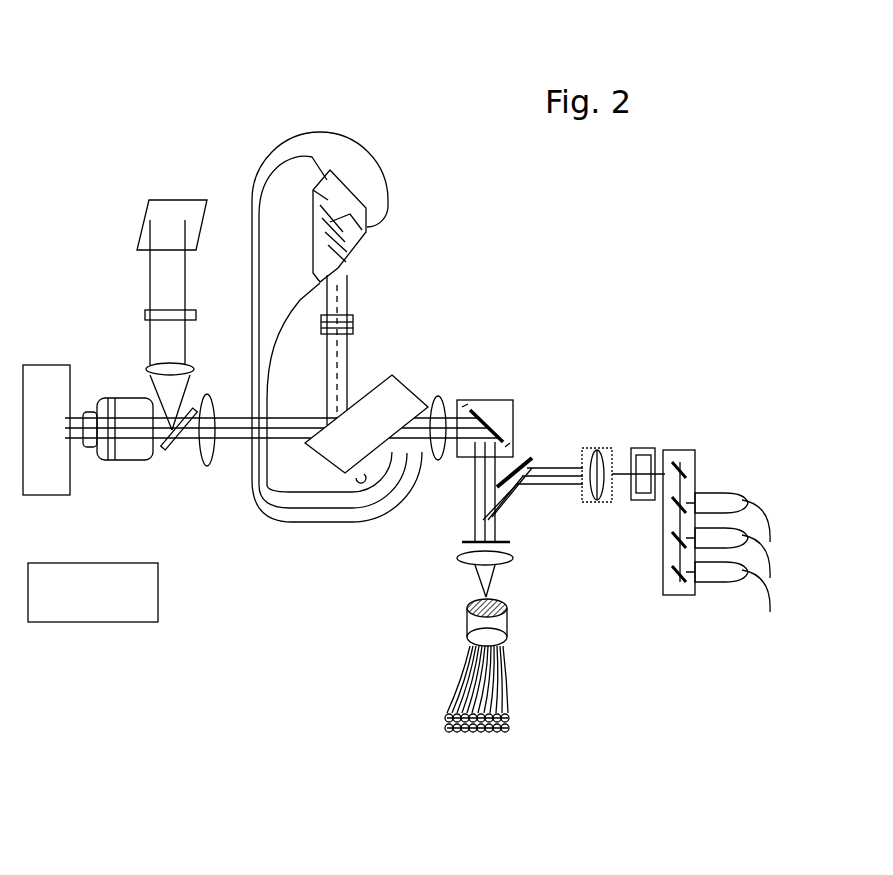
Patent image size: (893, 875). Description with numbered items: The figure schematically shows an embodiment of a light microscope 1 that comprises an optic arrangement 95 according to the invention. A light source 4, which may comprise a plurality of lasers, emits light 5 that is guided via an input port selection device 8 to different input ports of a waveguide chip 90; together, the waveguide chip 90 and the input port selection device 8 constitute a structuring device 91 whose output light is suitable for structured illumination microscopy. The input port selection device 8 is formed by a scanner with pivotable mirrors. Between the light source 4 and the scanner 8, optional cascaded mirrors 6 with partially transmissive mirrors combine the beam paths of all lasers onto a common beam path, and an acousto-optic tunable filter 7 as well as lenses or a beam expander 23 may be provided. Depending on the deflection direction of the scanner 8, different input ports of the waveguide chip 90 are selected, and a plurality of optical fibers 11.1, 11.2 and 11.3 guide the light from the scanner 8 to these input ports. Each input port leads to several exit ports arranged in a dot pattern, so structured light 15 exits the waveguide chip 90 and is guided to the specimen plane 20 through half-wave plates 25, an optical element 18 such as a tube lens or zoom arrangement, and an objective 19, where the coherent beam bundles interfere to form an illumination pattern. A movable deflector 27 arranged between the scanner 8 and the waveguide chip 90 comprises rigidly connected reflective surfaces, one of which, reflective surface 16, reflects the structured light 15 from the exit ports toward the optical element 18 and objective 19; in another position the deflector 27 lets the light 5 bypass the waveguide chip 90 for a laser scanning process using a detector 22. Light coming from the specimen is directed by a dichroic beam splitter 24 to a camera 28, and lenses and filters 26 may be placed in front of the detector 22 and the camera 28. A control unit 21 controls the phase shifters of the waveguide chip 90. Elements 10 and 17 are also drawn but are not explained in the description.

The light microscope 1 is at (192, 56).
The light source 4 is at (727, 483).
The light 5 is at (474, 484).
The cascaded mirrors 6 is at (686, 450).
The acousto-optic tunable filter 7 is at (648, 448).
The input port selection device 8 is at (485, 400).
The focusing lens 10 is at (468, 522).
The optical fiber 11.1 is at (269, 465).
The optical fiber 11.2 is at (262, 512).
The optical fiber 11.3 is at (282, 516).
The structured light 15 is at (327, 381).
The reflective surface 16 is at (386, 385).
The deflecting mirror 17 is at (530, 460).
The optical element 18 is at (208, 466).
The objective 19 is at (125, 462).
The specimen plane 20 is at (57, 402).
The control unit 21 is at (100, 600).
The detector 22 is at (510, 726).
The lenses 23 is at (597, 446).
The beam splitter 24 is at (171, 450).
The half-wave plates 25 is at (356, 322).
The lenses and filters 26 is at (145, 315).
The movable deflector 27 is at (372, 444).
The camera 28 is at (143, 217).
The waveguide chip 90 is at (360, 260).
The structuring device 91 is at (512, 261).
The optic arrangement 95 is at (448, 349).